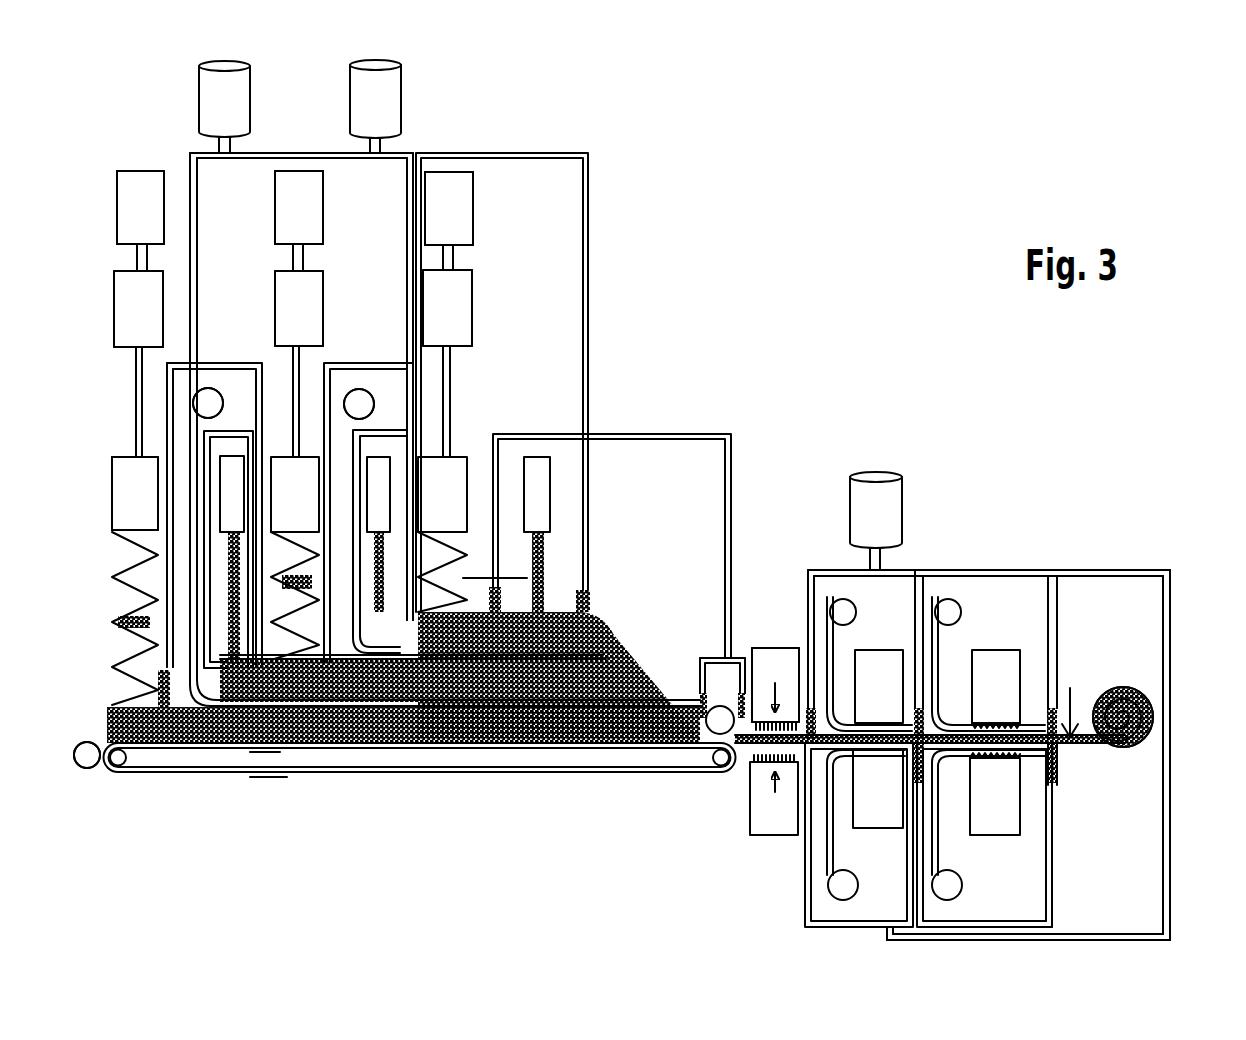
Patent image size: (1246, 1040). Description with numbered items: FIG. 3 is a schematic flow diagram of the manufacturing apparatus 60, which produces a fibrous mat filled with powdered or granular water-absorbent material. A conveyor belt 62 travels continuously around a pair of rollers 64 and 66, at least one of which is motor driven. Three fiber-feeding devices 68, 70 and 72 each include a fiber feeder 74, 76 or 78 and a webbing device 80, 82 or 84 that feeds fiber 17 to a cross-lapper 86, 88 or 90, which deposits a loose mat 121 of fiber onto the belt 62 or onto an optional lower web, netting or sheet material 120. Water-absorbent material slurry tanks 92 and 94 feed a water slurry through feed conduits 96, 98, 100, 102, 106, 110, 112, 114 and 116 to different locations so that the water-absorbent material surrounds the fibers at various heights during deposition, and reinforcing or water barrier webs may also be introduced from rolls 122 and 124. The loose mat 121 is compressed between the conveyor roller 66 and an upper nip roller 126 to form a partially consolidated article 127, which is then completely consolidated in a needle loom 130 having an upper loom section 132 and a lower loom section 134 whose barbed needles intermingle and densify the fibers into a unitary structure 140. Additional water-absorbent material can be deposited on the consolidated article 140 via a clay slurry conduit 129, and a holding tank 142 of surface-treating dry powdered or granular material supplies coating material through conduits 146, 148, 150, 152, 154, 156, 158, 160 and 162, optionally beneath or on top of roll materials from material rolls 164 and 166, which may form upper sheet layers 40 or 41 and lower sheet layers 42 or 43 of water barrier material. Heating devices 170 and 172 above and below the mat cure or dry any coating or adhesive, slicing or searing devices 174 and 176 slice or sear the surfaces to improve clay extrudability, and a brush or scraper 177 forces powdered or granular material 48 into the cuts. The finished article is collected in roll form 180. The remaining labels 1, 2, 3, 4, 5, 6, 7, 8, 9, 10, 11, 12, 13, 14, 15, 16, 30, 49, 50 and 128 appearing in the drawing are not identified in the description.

The first fiber stream 1 is at (195, 92).
The second fiber stream 2 is at (348, 95).
The first metering device 3 is at (116, 226).
The second metering device 4 is at (273, 226).
The third metering device 5 is at (475, 208).
The first mixing device 6 is at (114, 326).
The second mixing device 7 is at (273, 313).
The third mixing device 8 is at (474, 313).
The first roller 9 is at (224, 396).
The second roller 10 is at (369, 395).
The first distributor 11 is at (111, 508).
The second distributor feed 12 is at (298, 454).
The third distributor feed 13 is at (457, 455).
The first binder hopper 14 is at (243, 458).
The second binder hopper 15 is at (392, 459).
The third binder hopper 16 is at (526, 460).
The fiber 17 is at (134, 555).
The roll 30 is at (84, 767).
The upper layer of water barrier sheet material 40 is at (857, 614).
The upper layer of water barrier sheet material 41 is at (962, 612).
The lower layer of sheet material 42 is at (851, 873).
The lower layer of sheet material 43 is at (964, 886).
The powdered or granular material 48 is at (1058, 740).
The waste outlet 49 is at (1056, 760).
The product roll 50 is at (1120, 688).
The apparatus 60 is at (640, 306).
The conveyor belt 62 is at (212, 773).
The roller 64 is at (116, 773).
The conveyor roller 66 is at (715, 772).
The fiber-feeding device 68 is at (130, 168).
The fiber-feeding device 70 is at (288, 168).
The fiber-feeding device 72 is at (447, 169).
The fiber feeder 74 is at (122, 190).
The fiber feeder 76 is at (322, 196).
The fiber feeder 78 is at (471, 190).
The webbing device 80 is at (120, 300).
The webbing device 82 is at (322, 300).
The webbing device 84 is at (470, 288).
The cross-lapper 86 is at (148, 504).
The cross-lapper 88 is at (308, 504).
The cross-lapper 90 is at (455, 504).
The water-absorbent material slurry tank 92 is at (243, 88).
The water-absorbent material slurry tank 94 is at (392, 102).
The feed conduit 96 is at (197, 192).
The feed conduit 98 is at (410, 220).
The feed conduit 100 is at (588, 220).
The feed conduit 102 is at (376, 366).
The feed conduit 106 is at (412, 392).
The feed conduit 110 is at (167, 410).
The feed conduit 112 is at (264, 368).
The feed conduit 114 is at (253, 440).
The feed conduit 116 is at (290, 596).
The web, netting or sheet material 120 is at (87, 742).
The loose fibrous mat 121 is at (610, 628).
The roll of web, netting or sheet material 122 is at (195, 396).
The roll of web, netting or sheet material 124 is at (375, 408).
The upper nip roller 126 is at (718, 706).
The partially consolidated article 127 is at (733, 772).
The return duct 128 is at (731, 470).
The clay slurry conduit 129 is at (736, 665).
The needle loom 130 is at (789, 652).
The upper loom section 132 is at (772, 645).
The lower loom section 134 is at (758, 830).
The consolidated article 140 is at (1090, 745).
The holding tank 142 is at (893, 500).
The conduit 146 is at (1040, 572).
The conduit 148 is at (843, 562).
The conduit 150 is at (920, 598).
The conduit 152 is at (1058, 612).
The conduit 154 is at (1170, 722).
The conduit 156 is at (1142, 935).
The conduit 158 is at (805, 892).
The conduit 160 is at (920, 892).
The conduit 162 is at (1052, 838).
The material roll 164 is at (852, 598).
The material roll 166 is at (958, 600).
The upper heating device 170 is at (895, 672).
The lower heating device 172 is at (880, 815).
The slicing or searing device 174 is at (1002, 665).
The slicing or searing device 176 is at (1005, 828).
The brush or scraper 177 is at (1090, 704).
The roll form 180 is at (1142, 698).